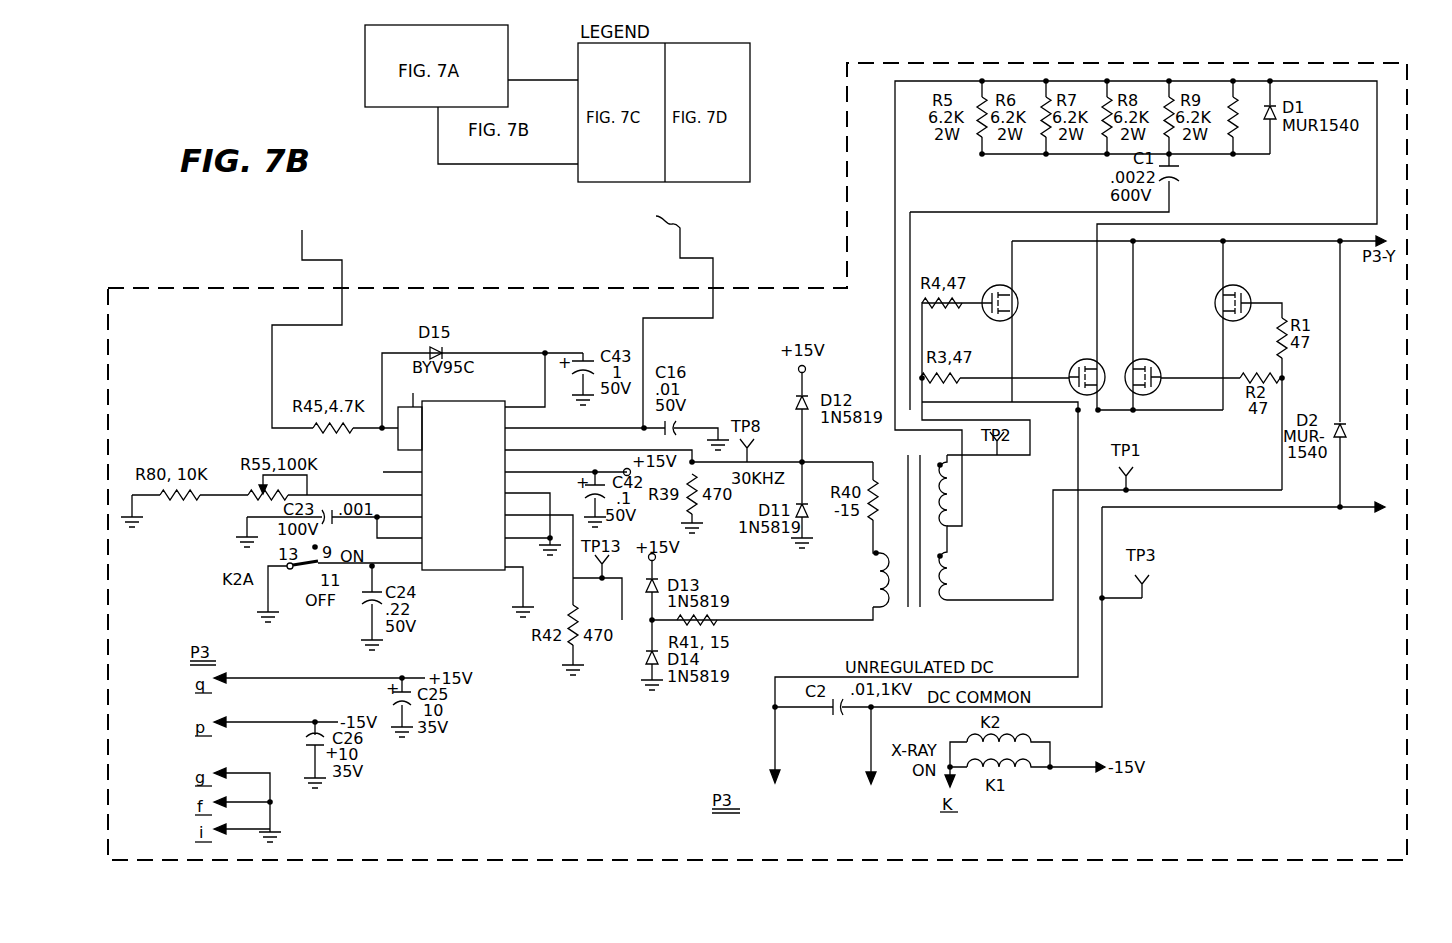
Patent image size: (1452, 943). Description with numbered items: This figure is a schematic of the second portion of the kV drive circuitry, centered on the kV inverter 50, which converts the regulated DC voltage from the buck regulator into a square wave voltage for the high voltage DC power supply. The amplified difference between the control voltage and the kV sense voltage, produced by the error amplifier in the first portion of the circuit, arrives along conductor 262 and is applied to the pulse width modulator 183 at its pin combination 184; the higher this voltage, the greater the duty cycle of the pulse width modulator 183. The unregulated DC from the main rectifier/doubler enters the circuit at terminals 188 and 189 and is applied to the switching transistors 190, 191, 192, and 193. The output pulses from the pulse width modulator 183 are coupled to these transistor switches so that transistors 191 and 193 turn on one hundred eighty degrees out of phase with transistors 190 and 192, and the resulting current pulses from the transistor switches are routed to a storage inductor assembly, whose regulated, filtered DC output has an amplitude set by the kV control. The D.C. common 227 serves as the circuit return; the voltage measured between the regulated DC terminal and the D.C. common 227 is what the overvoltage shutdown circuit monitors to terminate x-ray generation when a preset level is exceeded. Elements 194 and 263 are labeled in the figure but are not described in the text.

The kV inverter 50 is at (514, 278).
The pulse width modulator 183 is at (462, 571).
The pin combination 184 is at (396, 435).
The terminal 188 is at (779, 772).
The terminal 189 is at (865, 784).
The switching transistor 190 is at (1214, 295).
The switching transistor 191 is at (998, 286).
The switching transistor 192 is at (1108, 393).
The switching transistor 193 is at (1161, 392).
The transformer T1 194 is at (889, 462).
The D.C. common 227 is at (1382, 512).
The conductor 262 is at (302, 230).
The lead to FIG. 7A 263 is at (663, 317).